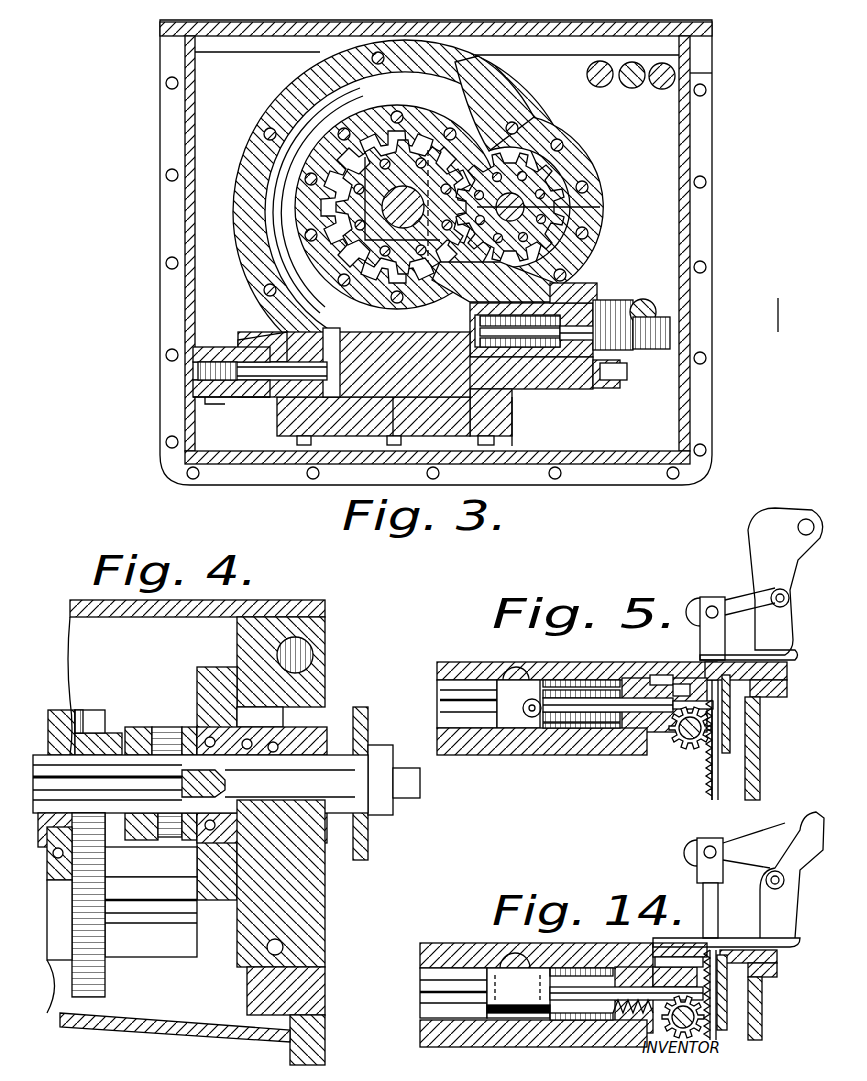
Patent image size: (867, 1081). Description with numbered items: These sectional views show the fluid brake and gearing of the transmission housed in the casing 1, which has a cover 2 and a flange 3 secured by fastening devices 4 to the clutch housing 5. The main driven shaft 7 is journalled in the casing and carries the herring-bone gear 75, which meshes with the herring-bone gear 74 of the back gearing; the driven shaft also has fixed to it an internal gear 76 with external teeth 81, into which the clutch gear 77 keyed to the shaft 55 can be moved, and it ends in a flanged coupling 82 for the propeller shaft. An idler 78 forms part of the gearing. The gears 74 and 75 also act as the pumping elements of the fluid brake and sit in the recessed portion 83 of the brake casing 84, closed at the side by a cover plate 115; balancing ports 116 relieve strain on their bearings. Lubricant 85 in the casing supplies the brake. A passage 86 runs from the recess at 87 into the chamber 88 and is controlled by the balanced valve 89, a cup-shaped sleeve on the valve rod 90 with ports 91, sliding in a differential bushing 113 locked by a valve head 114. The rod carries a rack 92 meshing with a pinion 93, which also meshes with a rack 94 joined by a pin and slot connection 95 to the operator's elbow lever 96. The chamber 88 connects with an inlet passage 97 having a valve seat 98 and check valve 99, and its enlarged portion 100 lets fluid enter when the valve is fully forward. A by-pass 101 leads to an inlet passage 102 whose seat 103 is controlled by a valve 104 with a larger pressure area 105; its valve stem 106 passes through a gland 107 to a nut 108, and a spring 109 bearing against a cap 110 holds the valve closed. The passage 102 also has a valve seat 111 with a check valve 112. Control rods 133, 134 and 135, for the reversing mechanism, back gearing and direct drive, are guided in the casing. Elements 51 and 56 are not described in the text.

In FIG. 3, the casing 1 is at (712, 150).
In FIG. 3, the cover 2 is at (712, 28).
In FIG. 3, the flange 3 is at (700, 230).
In FIG. 3, the fastening devices 4 is at (712, 185).
In FIG. 3, the clutch housing 5 is at (456, 330).
In FIG. 3, the main driven shaft 7 is at (312, 224).
In FIG. 4, the main driven shaft 7 is at (410, 798).
In FIG. 3, the valve housing 51 is at (470, 312).
In FIG. 4, the shaft 55 is at (45, 720).
In FIG. 4, the gear 56 is at (95, 740).
In FIG. 3, the herring-bone gear 74 is at (590, 187).
In FIG. 3, the herring-bone gear 75 is at (435, 165).
In FIG. 4, the herring-bone gear 75 is at (255, 720).
In FIG. 4, the internal gear 76 is at (150, 845).
In FIG. 4, the clutch gear 77 is at (145, 717).
In FIG. 4, the idler 78 is at (150, 918).
In FIG. 4, the external teeth 81 is at (197, 680).
In FIG. 14, the external teeth 81 is at (455, 943).
In FIG. 4, the flanged coupling 82 is at (325, 885).
In FIG. 3, the recessed portion 83 is at (555, 155).
In FIG. 3, the casing of the fluid brake mechanism 84 is at (497, 110).
In FIG. 4, the casing of the fluid brake mechanism 84 is at (340, 626).
In FIG. 5, the casing of the fluid brake mechanism 84 is at (470, 662).
In FIG. 3, the lubricant 85 is at (690, 365).
In FIG. 3, the passage 86 is at (330, 105).
In FIG. 4, the passage 86 is at (280, 655).
In FIG. 5, the passage 86 is at (437, 710).
In FIG. 14, the passage 86 is at (420, 1000).
In FIG. 3, the passage end 87 is at (515, 128).
In FIG. 3, the chamber 88 is at (490, 272).
In FIG. 3, the balanced valve 89 is at (540, 389).
In FIG. 5, the balanced valve 89 is at (580, 755).
In FIG. 14, the balanced valve 89 is at (520, 1000).
In FIG. 3, the valve rod 90 is at (560, 389).
In FIG. 5, the valve rod 90 is at (640, 755).
In FIG. 14, the valve rod 90 is at (570, 1000).
In FIG. 5, the ports 91 is at (610, 712).
In FIG. 3, the rack 92 is at (668, 330).
In FIG. 5, the rack 92 is at (680, 684).
In FIG. 14, the rack 92 is at (625, 1033).
In FIG. 3, the pinion 93 is at (620, 300).
In FIG. 5, the pinion 93 is at (695, 745).
In FIG. 14, the pinion 93 is at (700, 1022).
In FIG. 3, the rack 94 is at (670, 318).
In FIG. 5, the rack 94 is at (706, 770).
In FIG. 14, the rack 94 is at (722, 1012).
In FIG. 5, the pin and slot connection 95 is at (712, 598).
In FIG. 14, the pin and slot connection 95 is at (697, 852).
In FIG. 5, the elbow lever 96 is at (790, 515).
In FIG. 14, the elbow lever 96 is at (790, 830).
In FIG. 3, the inlet passage 97 is at (486, 445).
In FIG. 5, the inlet passage 97 is at (532, 717).
In FIG. 3, the valve seat 98 is at (500, 415).
In FIG. 3, the check valve 99 is at (512, 446).
In FIG. 5, the enlarged portion 100 is at (560, 680).
In FIG. 14, the enlarged portion 100 is at (560, 968).
In FIG. 3, the by-pass 101 is at (393, 445).
In FIG. 4, the by-pass 101 is at (283, 947).
In FIG. 3, the inlet passage 102 is at (330, 282).
In FIG. 3, the seat 103 is at (395, 345).
In FIG. 3, the valve 104 is at (338, 316).
In FIG. 3, the pressure area 105 is at (277, 415).
In FIG. 3, the valve stem 106 is at (260, 380).
In FIG. 3, the gland 107 is at (255, 338).
In FIG. 3, the nut 108 is at (205, 404).
In FIG. 3, the spring 109 is at (193, 360).
In FIG. 3, the cap 110 is at (200, 385).
In FIG. 3, the valve seat 111 is at (304, 445).
In FIG. 3, the check valve 112 is at (330, 160).
In FIG. 3, the differential bushing 113 is at (605, 385).
In FIG. 3, the valve head 114 is at (590, 300).
In FIG. 5, the valve head 114 is at (640, 675).
In FIG. 14, the valve head 114 is at (670, 957).
In FIG. 4, the cover plate 115 is at (99, 913).
In FIG. 3, the balancing ports 116 is at (615, 210).
In FIG. 3, the rod 133 is at (712, 73).
In FIG. 3, the rod 134 is at (610, 75).
In FIG. 3, the rod 135 is at (632, 88).